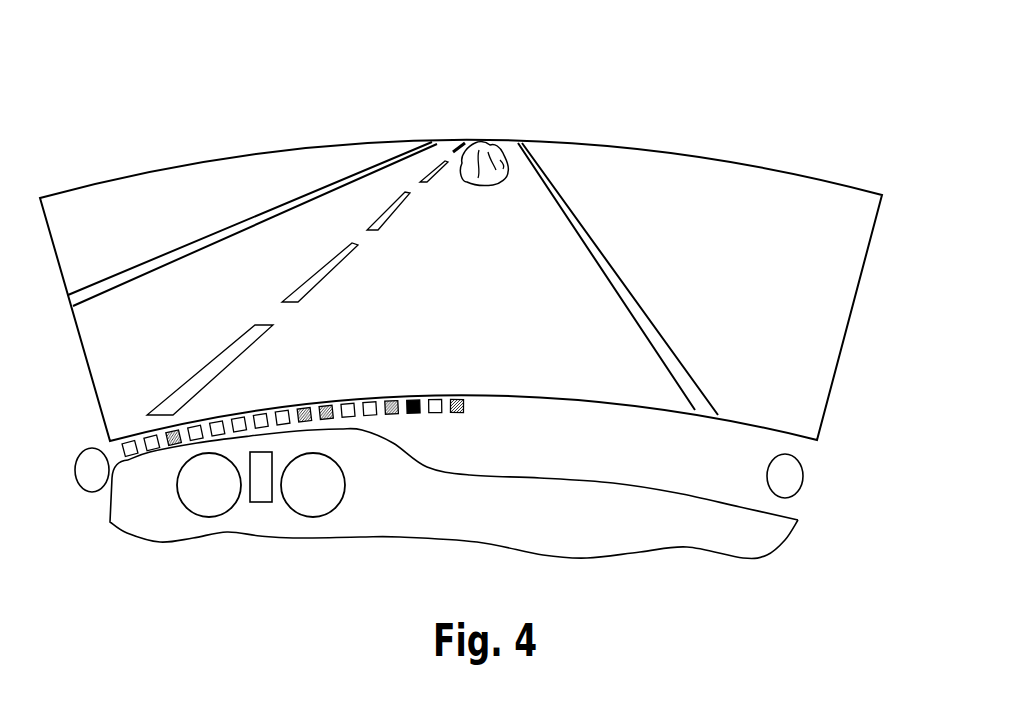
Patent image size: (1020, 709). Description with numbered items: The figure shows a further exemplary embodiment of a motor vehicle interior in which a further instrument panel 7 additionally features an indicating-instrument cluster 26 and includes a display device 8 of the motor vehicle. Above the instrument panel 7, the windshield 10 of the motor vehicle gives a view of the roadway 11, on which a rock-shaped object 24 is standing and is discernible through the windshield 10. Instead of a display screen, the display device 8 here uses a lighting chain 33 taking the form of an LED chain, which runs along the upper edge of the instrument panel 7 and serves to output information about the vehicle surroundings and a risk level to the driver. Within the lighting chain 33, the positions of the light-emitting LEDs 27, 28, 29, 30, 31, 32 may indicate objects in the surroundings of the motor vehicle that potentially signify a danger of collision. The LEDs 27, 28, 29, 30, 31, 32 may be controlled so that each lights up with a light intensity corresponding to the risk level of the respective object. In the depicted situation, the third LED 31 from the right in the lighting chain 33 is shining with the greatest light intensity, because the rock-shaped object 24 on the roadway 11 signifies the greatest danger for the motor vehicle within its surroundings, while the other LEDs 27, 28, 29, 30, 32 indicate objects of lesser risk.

The instrument panel 7 is at (607, 523).
The display device 8 is at (458, 444).
The windshield 10 is at (779, 149).
The roadway 11 is at (418, 287).
The rock-shaped object 24 is at (473, 155).
The indicating-instrument cluster 26 is at (258, 528).
The LED 27 is at (170, 432).
The LED 28 is at (301, 408).
The LED 29 is at (325, 406).
The LED 30 is at (390, 400).
The third LED 31 is at (415, 399).
The LED 32 is at (460, 399).
The lighting chain 33 is at (482, 409).